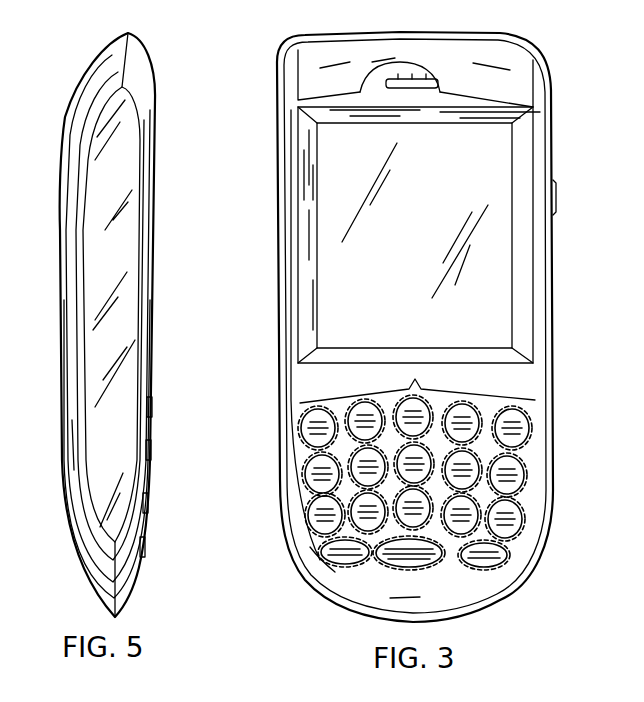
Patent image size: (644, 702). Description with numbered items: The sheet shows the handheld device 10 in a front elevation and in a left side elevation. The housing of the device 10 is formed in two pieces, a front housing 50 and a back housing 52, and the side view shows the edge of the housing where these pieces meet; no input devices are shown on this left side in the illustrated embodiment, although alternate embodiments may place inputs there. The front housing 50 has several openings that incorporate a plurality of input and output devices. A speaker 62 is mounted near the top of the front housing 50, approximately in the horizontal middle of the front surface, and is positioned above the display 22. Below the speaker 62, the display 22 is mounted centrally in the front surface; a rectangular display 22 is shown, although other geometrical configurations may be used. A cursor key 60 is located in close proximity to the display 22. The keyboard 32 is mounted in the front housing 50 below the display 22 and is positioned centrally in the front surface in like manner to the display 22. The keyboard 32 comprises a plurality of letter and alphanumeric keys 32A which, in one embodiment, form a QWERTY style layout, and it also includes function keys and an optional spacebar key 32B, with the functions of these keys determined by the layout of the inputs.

In FIG. 3, the device 10 is at (419, 323).
In FIG. 3, the display 22 is at (513, 160).
In FIG. 3, the keyboard 32 is at (382, 502).
In FIG. 5, the letter and alphanumeric keys 32A is at (150, 417).
In FIG. 3, the letter and alphanumeric keys 32A is at (347, 460).
In FIG. 3, the spacebar key 32B is at (380, 562).
In FIG. 5, the front housing 50 is at (155, 60).
In FIG. 3, the front housing 50 is at (277, 350).
In FIG. 5, the back housing 52 is at (78, 76).
In FIG. 3, the cursor key 60 is at (555, 200).
In FIG. 3, the speaker 62 is at (400, 80).